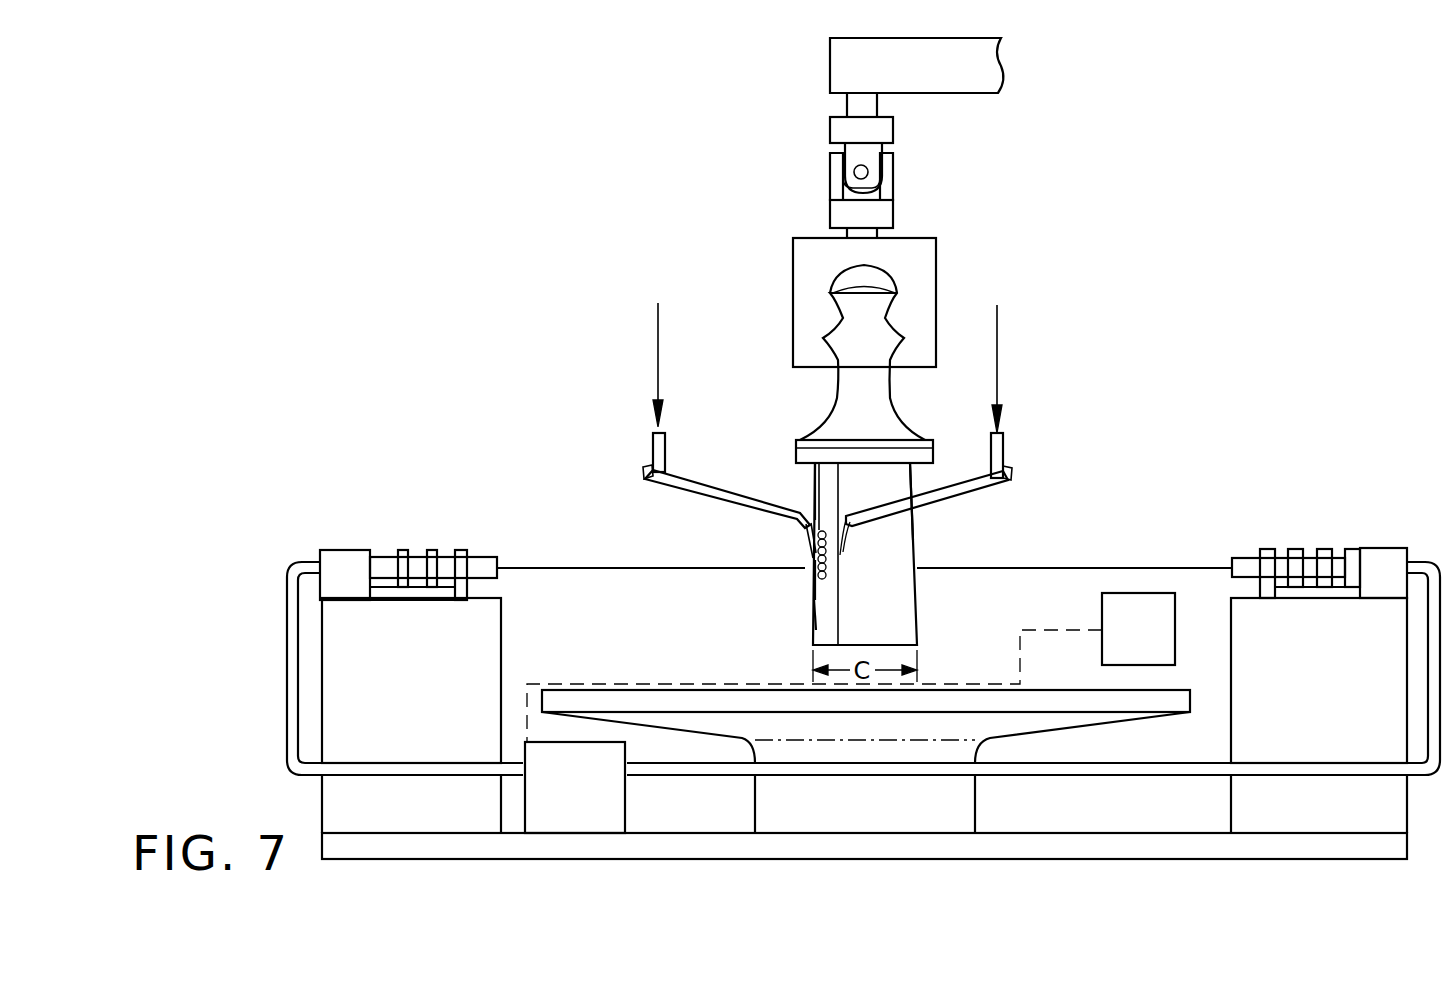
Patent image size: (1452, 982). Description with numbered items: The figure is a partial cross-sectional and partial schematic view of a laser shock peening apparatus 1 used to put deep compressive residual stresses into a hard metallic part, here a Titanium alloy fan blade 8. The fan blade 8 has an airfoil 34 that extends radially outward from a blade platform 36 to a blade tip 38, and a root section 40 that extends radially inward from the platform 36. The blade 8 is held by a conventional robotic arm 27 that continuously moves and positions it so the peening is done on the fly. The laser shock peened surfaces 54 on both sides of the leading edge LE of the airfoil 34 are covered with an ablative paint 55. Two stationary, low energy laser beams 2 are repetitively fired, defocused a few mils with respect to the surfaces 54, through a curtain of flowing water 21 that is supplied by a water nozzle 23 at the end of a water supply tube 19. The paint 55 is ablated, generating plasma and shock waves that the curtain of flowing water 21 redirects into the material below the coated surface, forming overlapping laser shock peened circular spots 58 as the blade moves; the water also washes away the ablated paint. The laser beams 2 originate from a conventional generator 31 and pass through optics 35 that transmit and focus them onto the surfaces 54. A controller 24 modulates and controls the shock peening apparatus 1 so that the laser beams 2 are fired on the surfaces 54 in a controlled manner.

The shock peening apparatus 1 is at (1155, 322).
The laser beams 2 is at (546, 568).
The fan blade 8 is at (917, 535).
The water supply tube 19 is at (700, 494).
The curtain of flowing water 21 is at (813, 535).
The water nozzle 23 is at (845, 530).
The controller 24 is at (1121, 643).
The robotic arm 27 is at (908, 138).
The generator 31 is at (561, 800).
The airfoil 34 is at (908, 566).
The optics 35 is at (403, 548).
The blade platform 36 is at (936, 452).
The blade tip 38 is at (910, 650).
The root section 40 is at (890, 384).
The laser shock peened surfaces 54 is at (822, 612).
The ablative paint 55 is at (830, 593).
The laser shock peened circular spots 58 is at (815, 579).
The leading edge LE is at (813, 490).